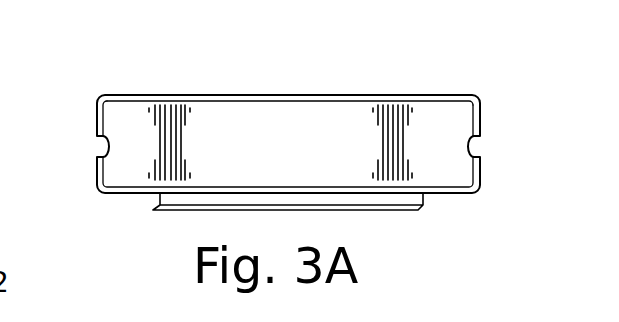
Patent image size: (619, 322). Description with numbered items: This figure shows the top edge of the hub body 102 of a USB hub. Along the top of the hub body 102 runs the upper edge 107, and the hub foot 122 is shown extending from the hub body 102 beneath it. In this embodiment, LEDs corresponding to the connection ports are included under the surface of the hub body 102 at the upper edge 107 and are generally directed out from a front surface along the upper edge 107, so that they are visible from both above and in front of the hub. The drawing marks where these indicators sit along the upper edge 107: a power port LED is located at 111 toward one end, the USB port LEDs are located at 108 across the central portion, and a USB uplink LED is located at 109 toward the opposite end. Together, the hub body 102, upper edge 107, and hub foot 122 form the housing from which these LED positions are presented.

The hub body 102 is at (460, 110).
The upper edge 107 is at (110, 115).
The USB port LEDs location 108 is at (333, 89).
The USB uplink LED location 109 is at (440, 88).
The power port LED location 111 is at (135, 88).
The hub foot 122 is at (422, 204).